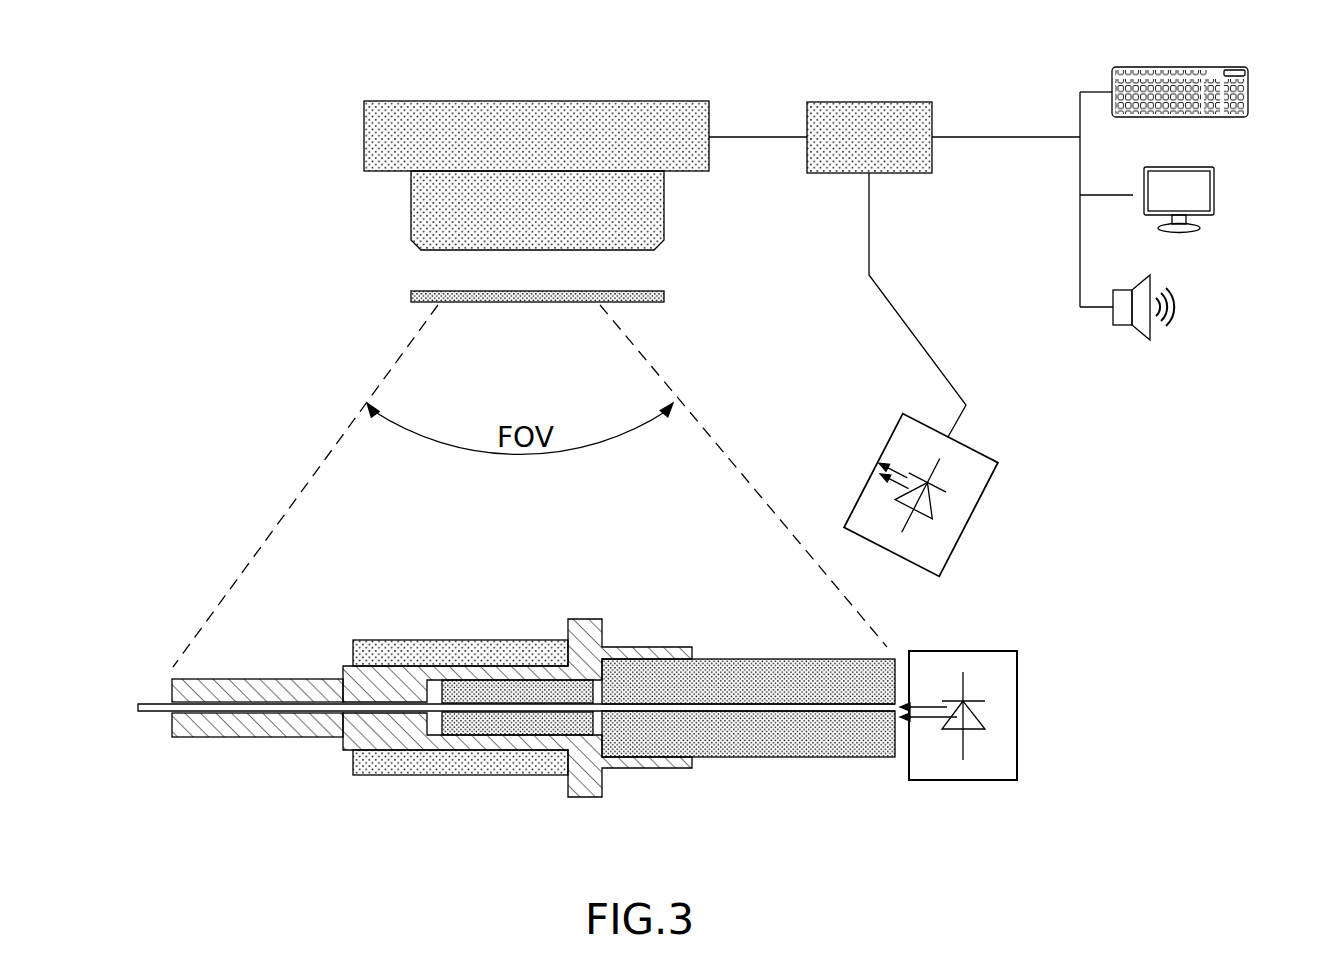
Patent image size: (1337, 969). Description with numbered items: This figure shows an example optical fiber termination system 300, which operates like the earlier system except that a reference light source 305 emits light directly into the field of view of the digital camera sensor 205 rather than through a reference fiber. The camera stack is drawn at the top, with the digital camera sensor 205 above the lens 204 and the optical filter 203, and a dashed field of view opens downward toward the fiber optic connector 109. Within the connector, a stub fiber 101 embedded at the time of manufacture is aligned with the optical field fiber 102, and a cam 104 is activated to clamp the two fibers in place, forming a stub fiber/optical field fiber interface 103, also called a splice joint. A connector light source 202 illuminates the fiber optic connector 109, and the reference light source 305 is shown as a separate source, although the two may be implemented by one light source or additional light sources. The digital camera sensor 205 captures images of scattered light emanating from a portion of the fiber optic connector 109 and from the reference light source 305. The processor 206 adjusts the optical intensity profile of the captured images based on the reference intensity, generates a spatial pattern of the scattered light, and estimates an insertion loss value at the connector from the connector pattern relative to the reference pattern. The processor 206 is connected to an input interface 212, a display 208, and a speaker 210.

The optical fiber termination system 300 is at (214, 120).
The digital camera sensor 205 is at (483, 105).
The lens 204 is at (645, 208).
The optical filter 203 is at (645, 298).
The processor 206 is at (848, 107).
The input interface 212 is at (1120, 77).
The display 208 is at (1200, 200).
The speaker 210 is at (1115, 315).
The reference light source 305 is at (967, 495).
The connector light source 202 is at (1006, 678).
The cam 104 is at (388, 633).
The stub fiber/optical field fiber interface 103 is at (515, 728).
The optical field fiber 102 is at (150, 714).
The stub fiber 101 is at (777, 707).
The fiber optic connector 109 is at (898, 829).